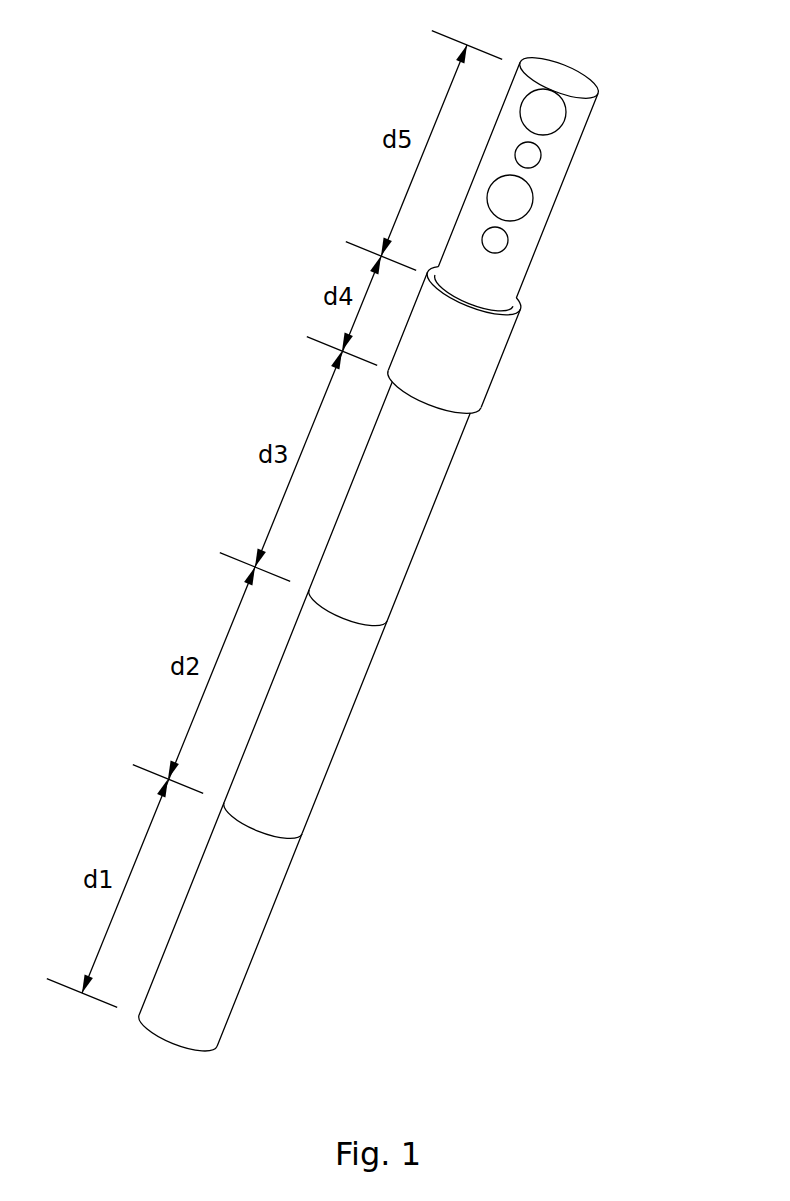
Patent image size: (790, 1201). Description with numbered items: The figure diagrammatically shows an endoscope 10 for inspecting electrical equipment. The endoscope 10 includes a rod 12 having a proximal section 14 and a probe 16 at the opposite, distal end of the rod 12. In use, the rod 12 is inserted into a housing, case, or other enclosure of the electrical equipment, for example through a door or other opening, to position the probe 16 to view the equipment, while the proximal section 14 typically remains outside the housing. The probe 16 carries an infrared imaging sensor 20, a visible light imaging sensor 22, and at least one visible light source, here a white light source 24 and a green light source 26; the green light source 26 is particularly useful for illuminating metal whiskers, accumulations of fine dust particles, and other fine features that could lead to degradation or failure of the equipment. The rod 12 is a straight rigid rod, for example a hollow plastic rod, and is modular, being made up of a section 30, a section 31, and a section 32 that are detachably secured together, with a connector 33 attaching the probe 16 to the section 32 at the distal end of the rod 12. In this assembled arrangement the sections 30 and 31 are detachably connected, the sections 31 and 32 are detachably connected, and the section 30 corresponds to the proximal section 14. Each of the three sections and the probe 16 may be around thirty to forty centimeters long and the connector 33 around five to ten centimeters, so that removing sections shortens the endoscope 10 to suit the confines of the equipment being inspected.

The endoscope 10 is at (422, 554).
The rod 12 is at (422, 554).
The proximal section 14 is at (235, 1052).
The probe 16 is at (574, 173).
The infrared imaging sensor 20 is at (517, 202).
The visible light imaging sensor 22 is at (548, 118).
The white light source 24 is at (549, 250).
The green light source 26 is at (530, 157).
The section 30 is at (221, 963).
The section 31 is at (320, 721).
The section 32 is at (405, 511).
The connector 33 is at (463, 359).